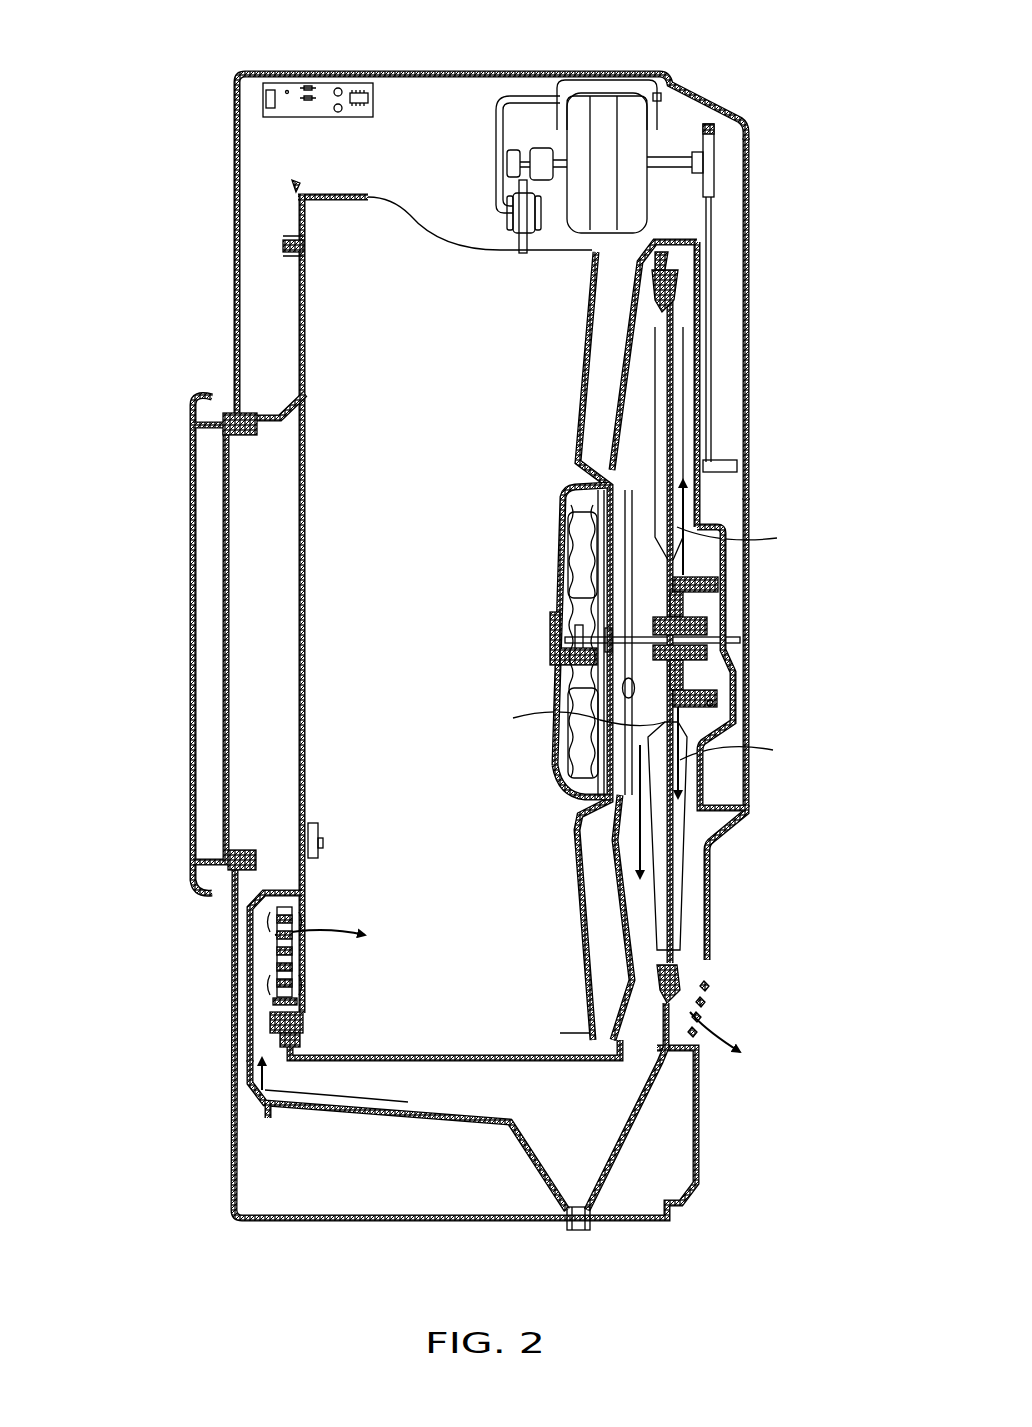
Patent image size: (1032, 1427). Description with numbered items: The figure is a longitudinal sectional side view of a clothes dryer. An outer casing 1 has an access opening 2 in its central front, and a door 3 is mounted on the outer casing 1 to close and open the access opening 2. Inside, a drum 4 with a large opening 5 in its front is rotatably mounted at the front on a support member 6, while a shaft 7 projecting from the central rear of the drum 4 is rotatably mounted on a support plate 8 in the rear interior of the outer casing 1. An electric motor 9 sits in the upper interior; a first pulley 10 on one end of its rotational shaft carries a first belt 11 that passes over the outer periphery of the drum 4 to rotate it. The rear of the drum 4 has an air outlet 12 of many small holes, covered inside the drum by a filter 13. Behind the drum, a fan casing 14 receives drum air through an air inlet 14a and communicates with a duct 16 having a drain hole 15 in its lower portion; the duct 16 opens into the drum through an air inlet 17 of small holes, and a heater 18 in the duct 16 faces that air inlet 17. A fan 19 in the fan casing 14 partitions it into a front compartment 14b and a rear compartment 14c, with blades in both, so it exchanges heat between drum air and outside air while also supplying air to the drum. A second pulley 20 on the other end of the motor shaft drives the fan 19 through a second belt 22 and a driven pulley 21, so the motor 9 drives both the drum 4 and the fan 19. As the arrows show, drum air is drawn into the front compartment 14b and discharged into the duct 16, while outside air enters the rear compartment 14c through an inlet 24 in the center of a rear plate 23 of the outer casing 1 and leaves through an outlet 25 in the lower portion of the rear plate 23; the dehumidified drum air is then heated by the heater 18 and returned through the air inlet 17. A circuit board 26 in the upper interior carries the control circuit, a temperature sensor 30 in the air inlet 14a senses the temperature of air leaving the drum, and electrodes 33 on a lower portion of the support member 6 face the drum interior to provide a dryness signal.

The outer casing 1 is at (468, 72).
The access opening 2 is at (250, 547).
The door 3 is at (195, 636).
The drum 4 is at (330, 186).
The large opening 5 is at (285, 246).
The support member 6 is at (300, 350).
The shaft 7 is at (635, 645).
The support plate 8 is at (747, 595).
The electric motor 9 is at (607, 115).
The first pulley 10 is at (517, 135).
The first belt 11 is at (520, 250).
The air outlet 12 is at (568, 520).
The filter 13 is at (558, 590).
The fan casing 14 is at (622, 362).
The air inlet 14a is at (632, 787).
The front compartment 14b is at (634, 425).
The rear compartment 14c is at (680, 306).
The drain hole 15 is at (576, 1232).
The duct 16 is at (381, 1108).
The air inlet 17 is at (292, 925).
The heater 18 is at (272, 935).
The fan 19 is at (705, 365).
The second pulley 20 is at (715, 152).
The driven pulley 21 is at (717, 705).
The second belt 22 is at (718, 400).
The rear plate 23 is at (749, 218).
The inlet 24 is at (750, 497).
The outlet 25 is at (710, 995).
The circuit board 26 is at (332, 82).
The temperature sensor 30 is at (740, 655).
The electrodes 33 is at (320, 840).